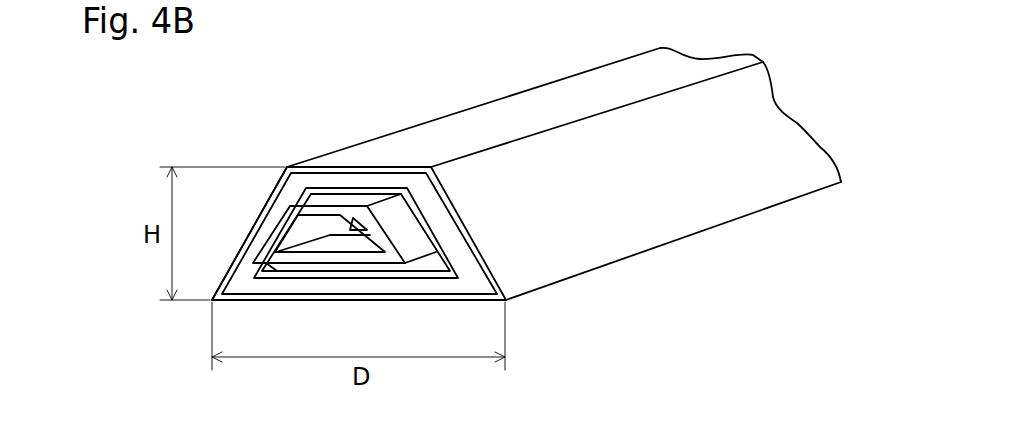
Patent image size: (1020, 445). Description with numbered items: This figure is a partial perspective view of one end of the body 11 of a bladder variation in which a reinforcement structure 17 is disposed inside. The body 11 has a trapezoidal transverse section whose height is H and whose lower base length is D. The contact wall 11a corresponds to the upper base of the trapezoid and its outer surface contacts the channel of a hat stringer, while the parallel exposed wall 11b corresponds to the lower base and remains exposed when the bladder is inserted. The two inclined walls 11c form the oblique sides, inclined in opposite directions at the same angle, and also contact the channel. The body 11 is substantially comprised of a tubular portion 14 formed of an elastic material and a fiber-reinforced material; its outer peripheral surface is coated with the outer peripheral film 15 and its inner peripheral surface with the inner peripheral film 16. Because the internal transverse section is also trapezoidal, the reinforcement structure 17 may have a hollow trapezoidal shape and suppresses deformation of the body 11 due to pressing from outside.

The body 11 is at (507, 203).
The contact wall 11a is at (537, 106).
The exposed wall 11b is at (379, 311).
The inclined wall 11c is at (255, 222).
The tubular portion 14 is at (438, 219).
The outer peripheral film 15 is at (445, 188).
The inner peripheral film 16 is at (449, 262).
The reinforcement structure 17 is at (325, 210).